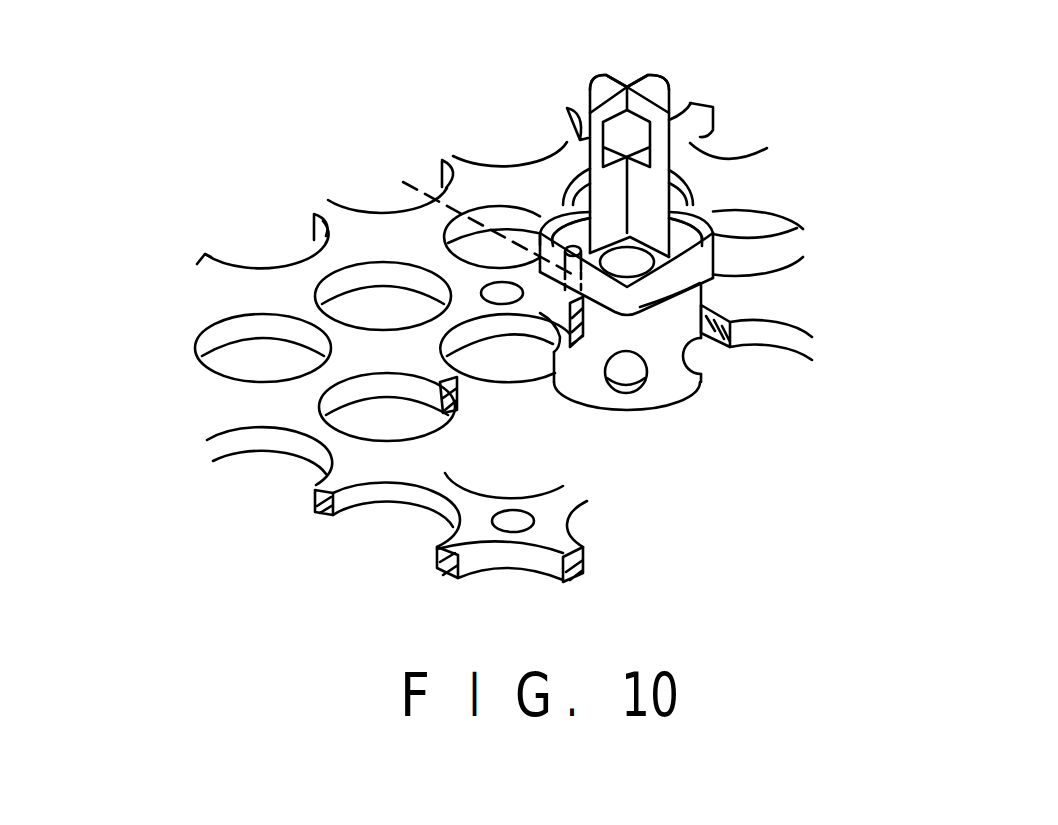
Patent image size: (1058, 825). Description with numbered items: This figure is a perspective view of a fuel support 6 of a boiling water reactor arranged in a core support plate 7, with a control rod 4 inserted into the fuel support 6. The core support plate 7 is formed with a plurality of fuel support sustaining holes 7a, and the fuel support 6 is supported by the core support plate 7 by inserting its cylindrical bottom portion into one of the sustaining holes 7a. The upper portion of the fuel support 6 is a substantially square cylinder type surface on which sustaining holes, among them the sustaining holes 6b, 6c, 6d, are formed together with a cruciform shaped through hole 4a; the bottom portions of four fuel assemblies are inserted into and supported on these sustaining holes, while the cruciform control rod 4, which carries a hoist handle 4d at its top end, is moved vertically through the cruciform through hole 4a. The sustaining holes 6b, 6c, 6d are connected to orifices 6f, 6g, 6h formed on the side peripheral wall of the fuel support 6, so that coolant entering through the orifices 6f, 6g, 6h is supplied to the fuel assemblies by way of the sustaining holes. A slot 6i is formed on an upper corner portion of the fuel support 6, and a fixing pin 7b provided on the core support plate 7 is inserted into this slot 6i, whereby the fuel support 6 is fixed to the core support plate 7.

The control rod 4 is at (627, 88).
The cruciform through hole 4a is at (715, 285).
The hoist handle 4d is at (667, 97).
The fuel support 6 is at (700, 383).
The sustaining hole 6b is at (687, 231).
The sustaining hole 6c is at (624, 270).
The sustaining hole 6d is at (572, 231).
The orifice 6f is at (700, 352).
The orifice 6g is at (627, 382).
The orifice 6h is at (553, 360).
The slot 6i is at (540, 237).
The core support plate 7 is at (592, 548).
The fuel support sustaining hole 7a is at (345, 300).
The fixing pin 7b is at (469, 213).